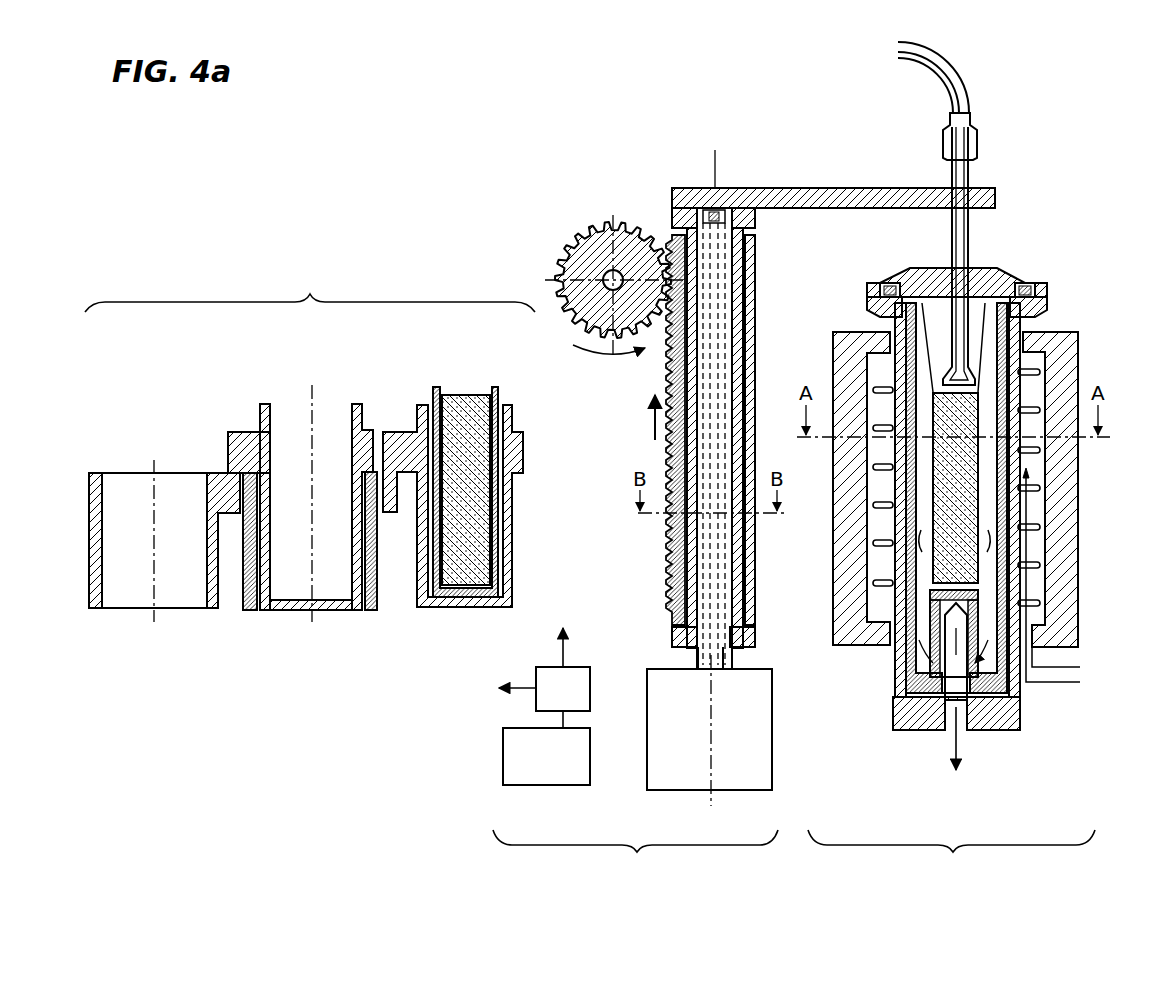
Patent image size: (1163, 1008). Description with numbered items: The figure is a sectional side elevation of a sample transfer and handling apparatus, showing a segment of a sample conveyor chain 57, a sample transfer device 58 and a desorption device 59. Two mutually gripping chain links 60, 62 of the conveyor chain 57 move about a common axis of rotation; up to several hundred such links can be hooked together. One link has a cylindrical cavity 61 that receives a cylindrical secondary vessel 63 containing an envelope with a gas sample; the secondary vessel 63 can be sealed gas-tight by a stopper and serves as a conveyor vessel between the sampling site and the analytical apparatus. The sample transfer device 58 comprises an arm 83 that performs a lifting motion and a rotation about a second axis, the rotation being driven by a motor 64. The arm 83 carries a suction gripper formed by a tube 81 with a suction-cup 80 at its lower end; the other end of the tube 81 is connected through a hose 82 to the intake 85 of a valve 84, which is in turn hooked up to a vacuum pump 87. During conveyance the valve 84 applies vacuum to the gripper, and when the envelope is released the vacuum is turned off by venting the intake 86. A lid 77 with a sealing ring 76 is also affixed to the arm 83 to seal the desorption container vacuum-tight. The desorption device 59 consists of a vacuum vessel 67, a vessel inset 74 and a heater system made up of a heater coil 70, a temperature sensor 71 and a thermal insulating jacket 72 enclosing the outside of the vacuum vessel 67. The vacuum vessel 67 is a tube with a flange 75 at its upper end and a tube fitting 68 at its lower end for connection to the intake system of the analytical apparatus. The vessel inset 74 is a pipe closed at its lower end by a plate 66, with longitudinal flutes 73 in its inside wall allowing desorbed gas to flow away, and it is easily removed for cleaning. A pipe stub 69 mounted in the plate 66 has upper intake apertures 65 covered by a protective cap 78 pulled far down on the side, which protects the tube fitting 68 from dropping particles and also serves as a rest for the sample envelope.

The sample conveyor chain 57 is at (310, 289).
The sample transfer device 58 is at (635, 856).
The desorption device 59 is at (951, 856).
The chain link 60 is at (206, 578).
The cylindrical cavity 61 is at (326, 558).
The chain link 62 is at (418, 565).
The secondary vessel 63 is at (478, 597).
The motor 64 is at (709, 745).
The intake apertures 65 is at (900, 655).
The plate 66 is at (895, 702).
The vacuum vessel 67 is at (897, 555).
The tube fitting 68 is at (947, 720).
The pipe stub 69 is at (978, 728).
The heater coil 70 is at (1022, 604).
The temperature sensor 71 is at (1030, 472).
The thermal insulating jacket 72 is at (1060, 463).
The longitudinal flutes 73 is at (1005, 398).
The vessel inset 74 is at (1015, 326).
The flange 75 is at (876, 322).
The sealing ring 76 is at (886, 292).
The lid 77 is at (984, 282).
The protective cap 78 is at (920, 605).
The suction-cup 80 is at (940, 372).
The tube 81 is at (968, 177).
The hose 82 is at (944, 70).
The arm 83 is at (858, 190).
The valve 84 is at (563, 697).
The intake 85 is at (563, 633).
The intake 86 is at (502, 688).
The vacuum pump 87 is at (546, 756).